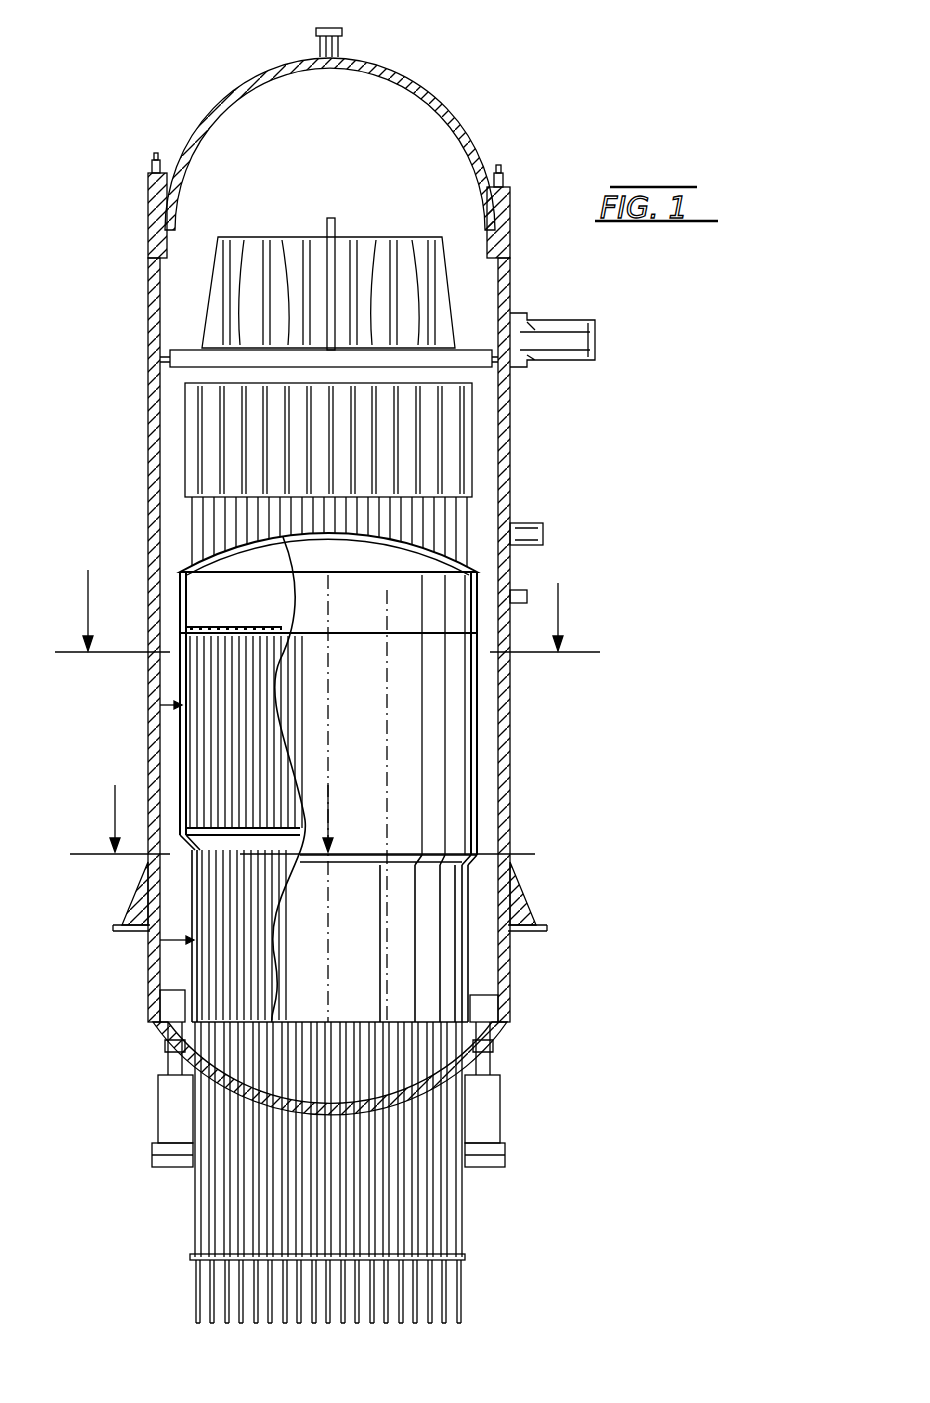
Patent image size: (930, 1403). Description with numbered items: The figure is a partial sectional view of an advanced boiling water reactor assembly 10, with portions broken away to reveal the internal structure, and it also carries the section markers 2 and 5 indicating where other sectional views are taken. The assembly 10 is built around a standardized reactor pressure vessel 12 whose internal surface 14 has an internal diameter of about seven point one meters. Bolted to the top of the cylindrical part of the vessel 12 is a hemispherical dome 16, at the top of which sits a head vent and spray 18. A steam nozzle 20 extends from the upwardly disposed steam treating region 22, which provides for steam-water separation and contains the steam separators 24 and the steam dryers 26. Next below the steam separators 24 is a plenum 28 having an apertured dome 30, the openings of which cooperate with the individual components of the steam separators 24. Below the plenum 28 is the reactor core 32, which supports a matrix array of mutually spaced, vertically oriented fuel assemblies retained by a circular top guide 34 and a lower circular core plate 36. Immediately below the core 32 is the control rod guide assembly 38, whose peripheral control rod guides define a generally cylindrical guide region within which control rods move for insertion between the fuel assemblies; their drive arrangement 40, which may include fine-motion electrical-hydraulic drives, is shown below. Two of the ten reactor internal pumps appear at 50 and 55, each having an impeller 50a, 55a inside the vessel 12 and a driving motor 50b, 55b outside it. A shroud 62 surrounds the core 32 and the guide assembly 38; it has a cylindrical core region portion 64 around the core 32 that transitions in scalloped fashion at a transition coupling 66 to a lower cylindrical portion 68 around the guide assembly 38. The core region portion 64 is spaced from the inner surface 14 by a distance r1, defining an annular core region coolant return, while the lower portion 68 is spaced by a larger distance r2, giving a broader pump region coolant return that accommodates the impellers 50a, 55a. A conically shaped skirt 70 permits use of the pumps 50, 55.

The advanced BWR reactor assembly 10 is at (548, 94).
The reactor pressure vessel 12 is at (125, 444).
The internal surface 14 is at (163, 296).
The hemispherical dome 16 is at (432, 92).
The head vent and spray 18 is at (342, 36).
The steam nozzle 20 is at (560, 325).
The steam treating region 22 is at (130, 352).
The steam separators 24 is at (475, 405).
The steam dryers 26 is at (378, 240).
The plenum 28 is at (480, 580).
The apertured dome 30 is at (470, 523).
The reactor core 32 is at (202, 760).
The top guide 34 is at (182, 630).
The core plate 36 is at (160, 862).
The control rod guide assembly 38 is at (215, 960).
The drive arrangement 40 is at (170, 1221).
The reactor internal pump 50 is at (148, 1084).
The impeller 50a is at (170, 1005).
The driving motor 50b is at (170, 1120).
The reactor internal pump 55 is at (513, 1078).
The impeller 55a is at (500, 1012).
The driving motor 55b is at (500, 1130).
The shroud 62 is at (492, 778).
The cylindrical core region portion 64 is at (482, 715).
The transition coupling 66 is at (485, 850).
The lower cylindrical portion 68 is at (482, 958).
The conically shaped skirt 70 is at (540, 916).
The distance r1 is at (150, 722).
The distance r2 is at (178, 940).
The section line 2- 2 is at (327, 629).
The section line 5- 5 is at (302, 819).